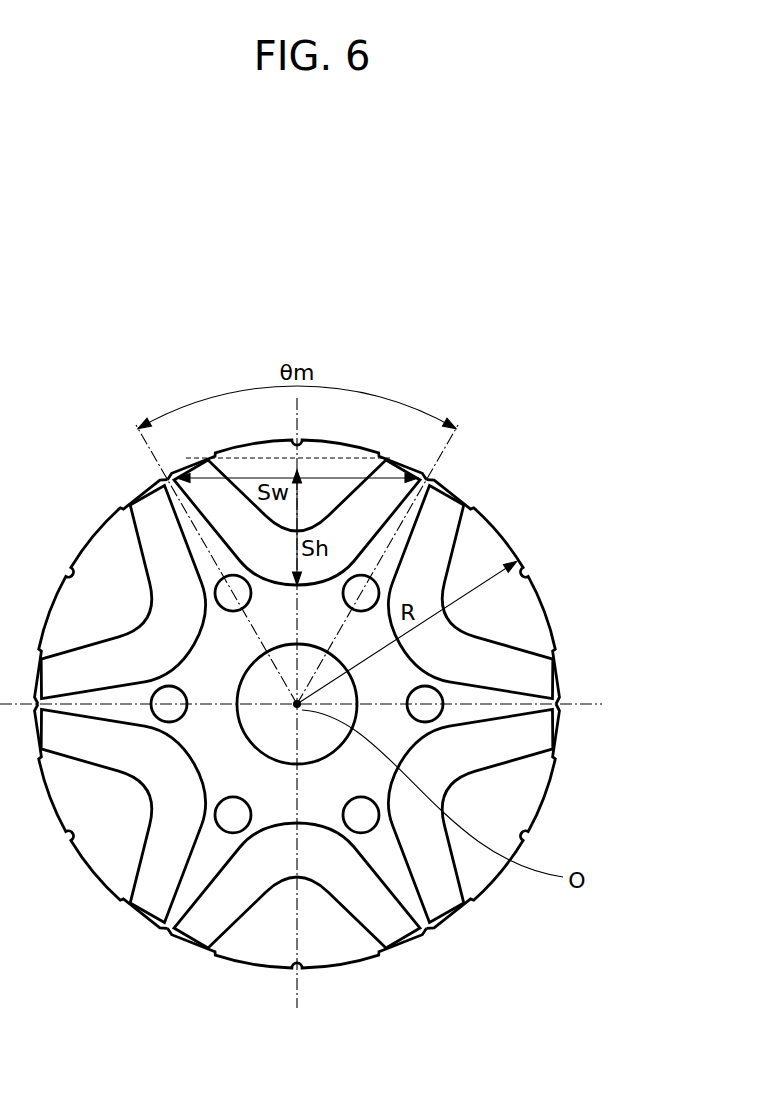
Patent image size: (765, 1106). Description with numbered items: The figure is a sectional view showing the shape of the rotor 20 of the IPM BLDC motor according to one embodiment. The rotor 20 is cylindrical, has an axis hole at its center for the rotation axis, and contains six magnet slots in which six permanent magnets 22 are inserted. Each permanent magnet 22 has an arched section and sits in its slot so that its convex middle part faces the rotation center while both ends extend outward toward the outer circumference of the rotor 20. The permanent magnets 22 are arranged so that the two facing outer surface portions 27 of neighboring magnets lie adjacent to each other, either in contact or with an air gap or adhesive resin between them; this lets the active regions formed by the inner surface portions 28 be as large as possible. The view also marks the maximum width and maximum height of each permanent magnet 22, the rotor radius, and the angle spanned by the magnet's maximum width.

The rotor 20 is at (181, 277).
The permanent magnet 22 is at (560, 667).
The outer surface portion 27 is at (200, 515).
The inner surface portion 28 is at (343, 492).